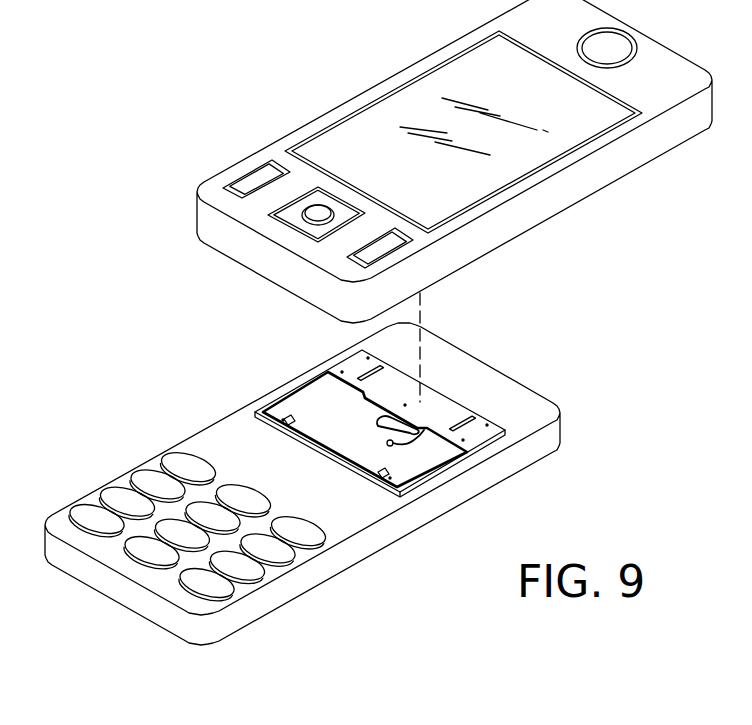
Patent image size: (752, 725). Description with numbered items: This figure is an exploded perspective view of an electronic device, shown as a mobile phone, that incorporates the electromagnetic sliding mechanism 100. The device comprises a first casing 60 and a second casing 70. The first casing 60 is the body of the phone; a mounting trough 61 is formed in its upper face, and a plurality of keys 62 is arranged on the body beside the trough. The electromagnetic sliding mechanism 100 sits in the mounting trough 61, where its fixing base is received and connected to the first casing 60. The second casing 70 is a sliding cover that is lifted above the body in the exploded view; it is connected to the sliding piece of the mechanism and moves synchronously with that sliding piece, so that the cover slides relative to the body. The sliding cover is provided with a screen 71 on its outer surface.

The first casing 60 is at (192, 420).
The mounting trough 61 is at (452, 470).
The keys 62 is at (283, 557).
The second casing 70 is at (366, 78).
The screen 71 is at (420, 88).
The electromagnetic sliding mechanism 100 is at (450, 386).